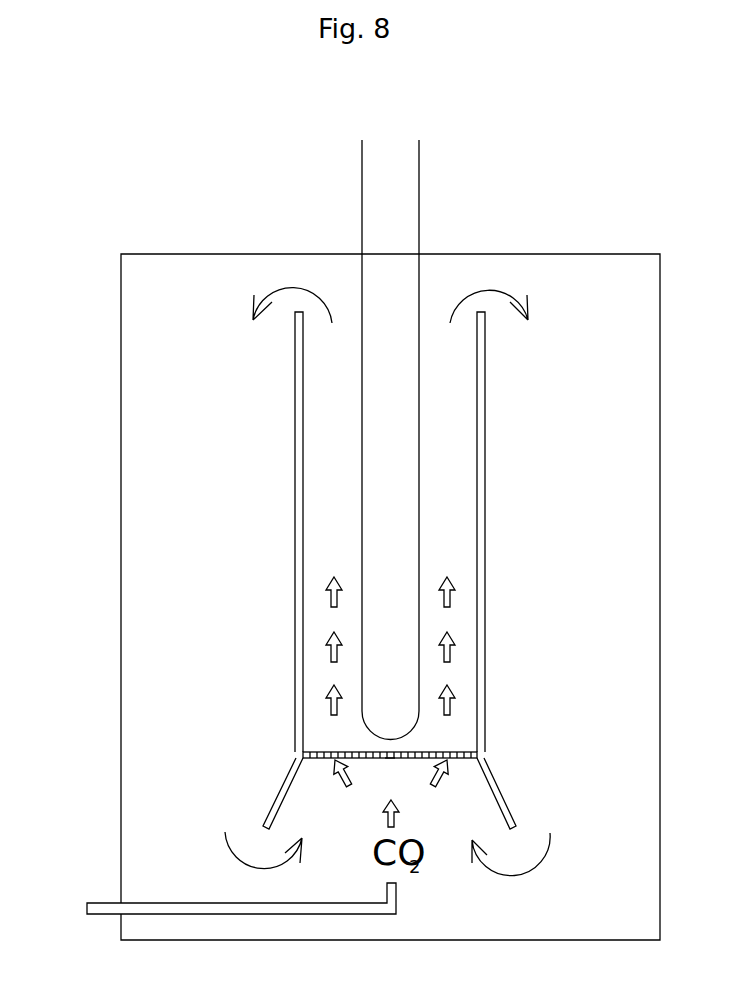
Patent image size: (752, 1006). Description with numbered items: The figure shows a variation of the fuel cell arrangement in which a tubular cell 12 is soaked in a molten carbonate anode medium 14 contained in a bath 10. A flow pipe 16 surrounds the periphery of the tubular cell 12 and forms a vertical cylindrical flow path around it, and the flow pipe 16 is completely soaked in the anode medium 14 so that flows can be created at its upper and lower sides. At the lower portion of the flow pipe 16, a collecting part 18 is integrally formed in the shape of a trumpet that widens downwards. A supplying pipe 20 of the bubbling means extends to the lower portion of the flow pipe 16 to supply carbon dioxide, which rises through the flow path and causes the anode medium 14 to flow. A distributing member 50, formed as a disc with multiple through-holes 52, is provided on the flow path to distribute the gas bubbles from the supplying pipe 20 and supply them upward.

The bath 10 is at (171, 254).
The tubular cell 12 is at (362, 165).
The anode medium 14 is at (220, 283).
The flow pipe 16 is at (298, 550).
The collecting part 18 is at (277, 790).
The supplying pipe 20 is at (335, 908).
The distributing member 50 is at (313, 753).
The through-holes 52 is at (410, 758).